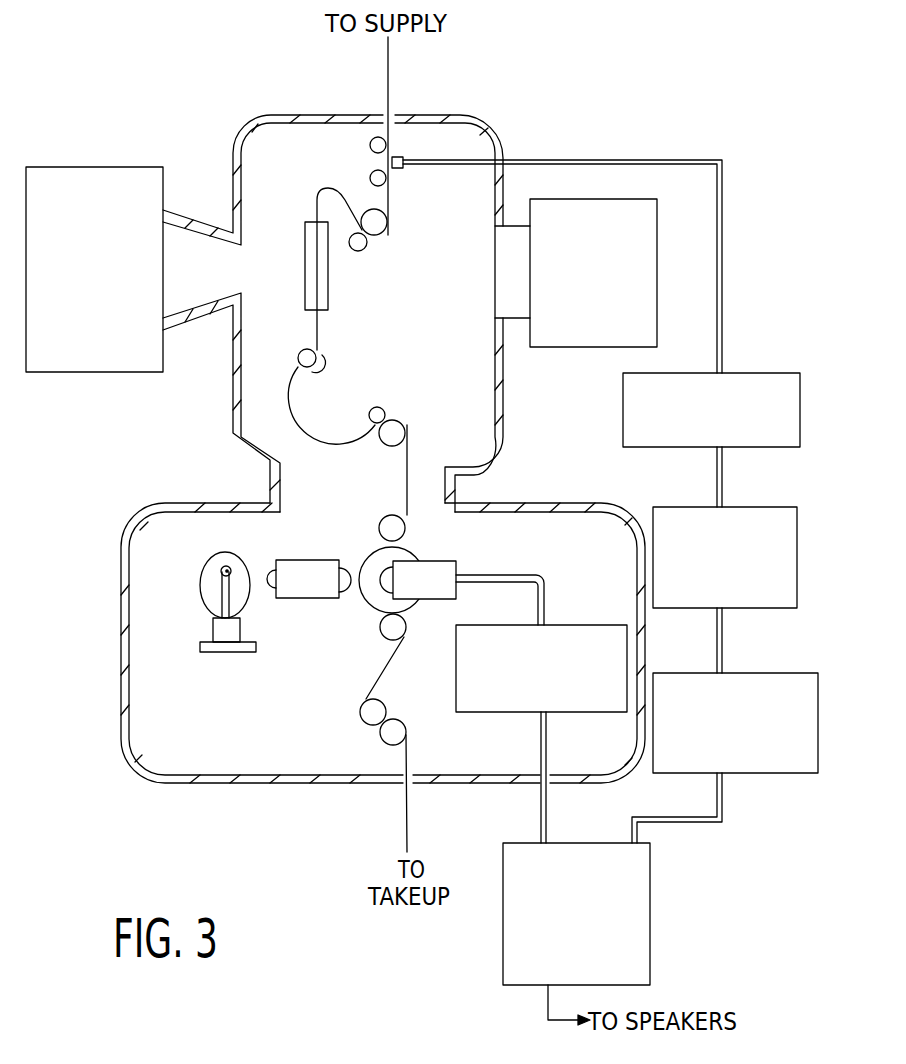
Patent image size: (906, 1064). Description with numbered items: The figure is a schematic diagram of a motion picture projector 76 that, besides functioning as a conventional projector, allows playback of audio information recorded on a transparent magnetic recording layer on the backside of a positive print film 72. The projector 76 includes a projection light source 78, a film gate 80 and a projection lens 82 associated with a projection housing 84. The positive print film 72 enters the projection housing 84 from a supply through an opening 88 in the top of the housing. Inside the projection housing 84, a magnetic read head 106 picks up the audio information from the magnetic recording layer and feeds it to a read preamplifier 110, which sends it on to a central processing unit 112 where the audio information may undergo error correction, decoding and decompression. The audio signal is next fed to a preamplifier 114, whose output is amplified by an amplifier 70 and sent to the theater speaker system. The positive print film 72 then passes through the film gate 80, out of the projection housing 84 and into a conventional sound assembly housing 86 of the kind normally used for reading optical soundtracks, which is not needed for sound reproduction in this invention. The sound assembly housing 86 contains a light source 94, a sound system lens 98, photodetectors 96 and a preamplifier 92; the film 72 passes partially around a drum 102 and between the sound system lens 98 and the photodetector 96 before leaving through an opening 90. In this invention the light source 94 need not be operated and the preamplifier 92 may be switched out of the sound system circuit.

The amplifier 70 is at (650, 902).
The positive print film 72 is at (405, 480).
The motion picture projector 76 is at (538, 75).
The projection light source 78 is at (82, 167).
The film gate 80 is at (330, 272).
The projection lens 82 is at (658, 222).
The projection housing 84 is at (503, 404).
The sound assembly housing 86 is at (122, 537).
The opening 88 is at (393, 112).
The opening 90 is at (412, 785).
The preamplifier 92 is at (586, 624).
The light source 94 is at (203, 572).
The photodetectors 96 is at (460, 566).
The sound system lens 98 is at (305, 560).
The drum 102 is at (413, 552).
The magnetic read head 106 is at (402, 168).
The read preamplifier 110 is at (765, 373).
The central processing unit 112 is at (690, 505).
The preamplifier 114 is at (790, 672).